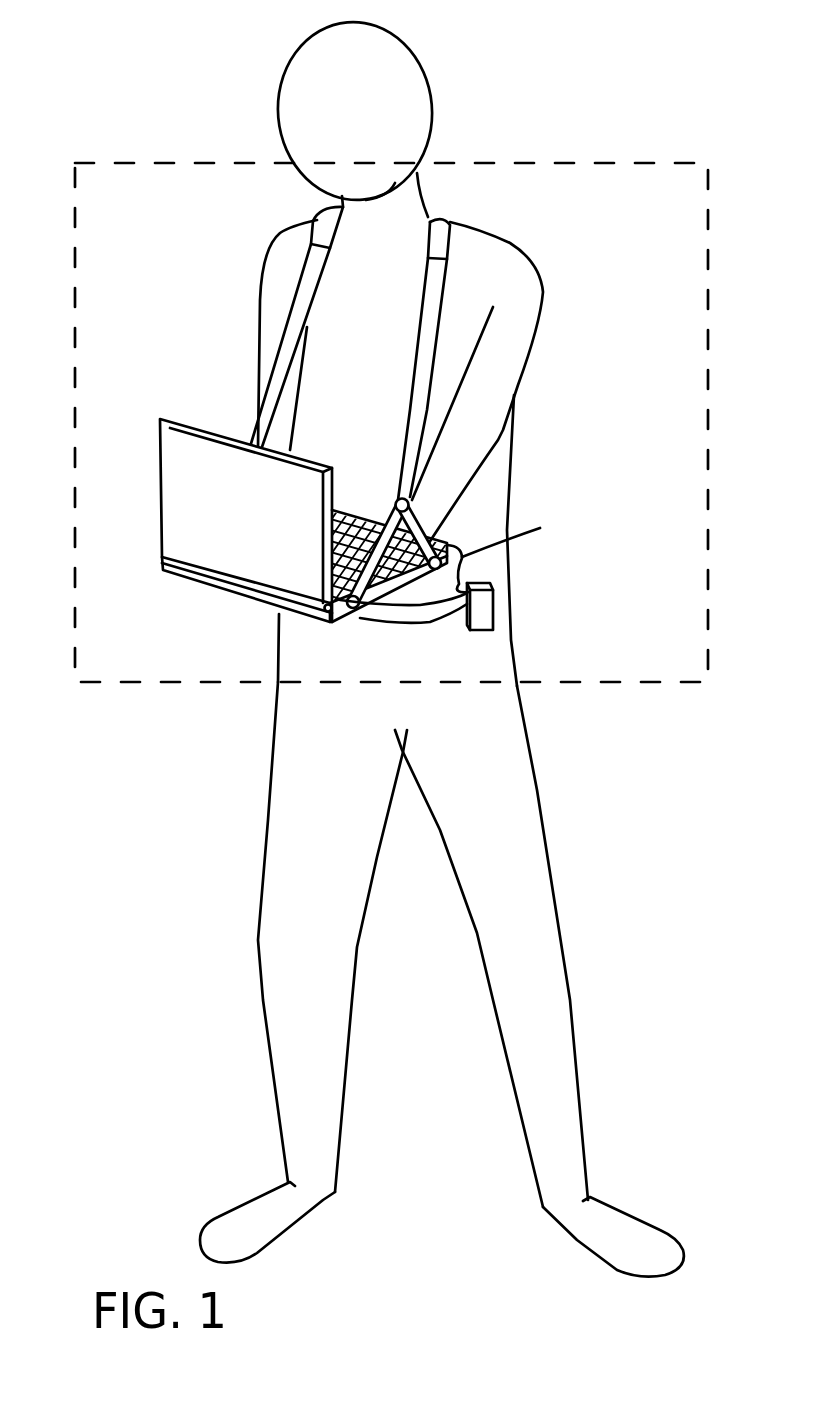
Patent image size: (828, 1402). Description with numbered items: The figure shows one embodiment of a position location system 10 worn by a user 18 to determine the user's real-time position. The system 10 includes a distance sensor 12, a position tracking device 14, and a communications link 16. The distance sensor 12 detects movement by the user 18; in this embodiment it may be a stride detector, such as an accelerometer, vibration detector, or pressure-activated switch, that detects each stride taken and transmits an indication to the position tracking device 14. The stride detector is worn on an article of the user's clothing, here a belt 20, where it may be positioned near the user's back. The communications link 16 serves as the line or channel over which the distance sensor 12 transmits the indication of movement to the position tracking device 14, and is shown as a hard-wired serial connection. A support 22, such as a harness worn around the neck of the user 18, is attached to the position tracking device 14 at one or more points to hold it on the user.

The position location system 10 is at (555, 161).
The distance sensor 12 is at (487, 610).
The position tracking device 14 is at (190, 422).
The communications link 16 is at (470, 563).
The user 18 is at (273, 310).
The belt 20 is at (430, 620).
The support 22 is at (433, 288).